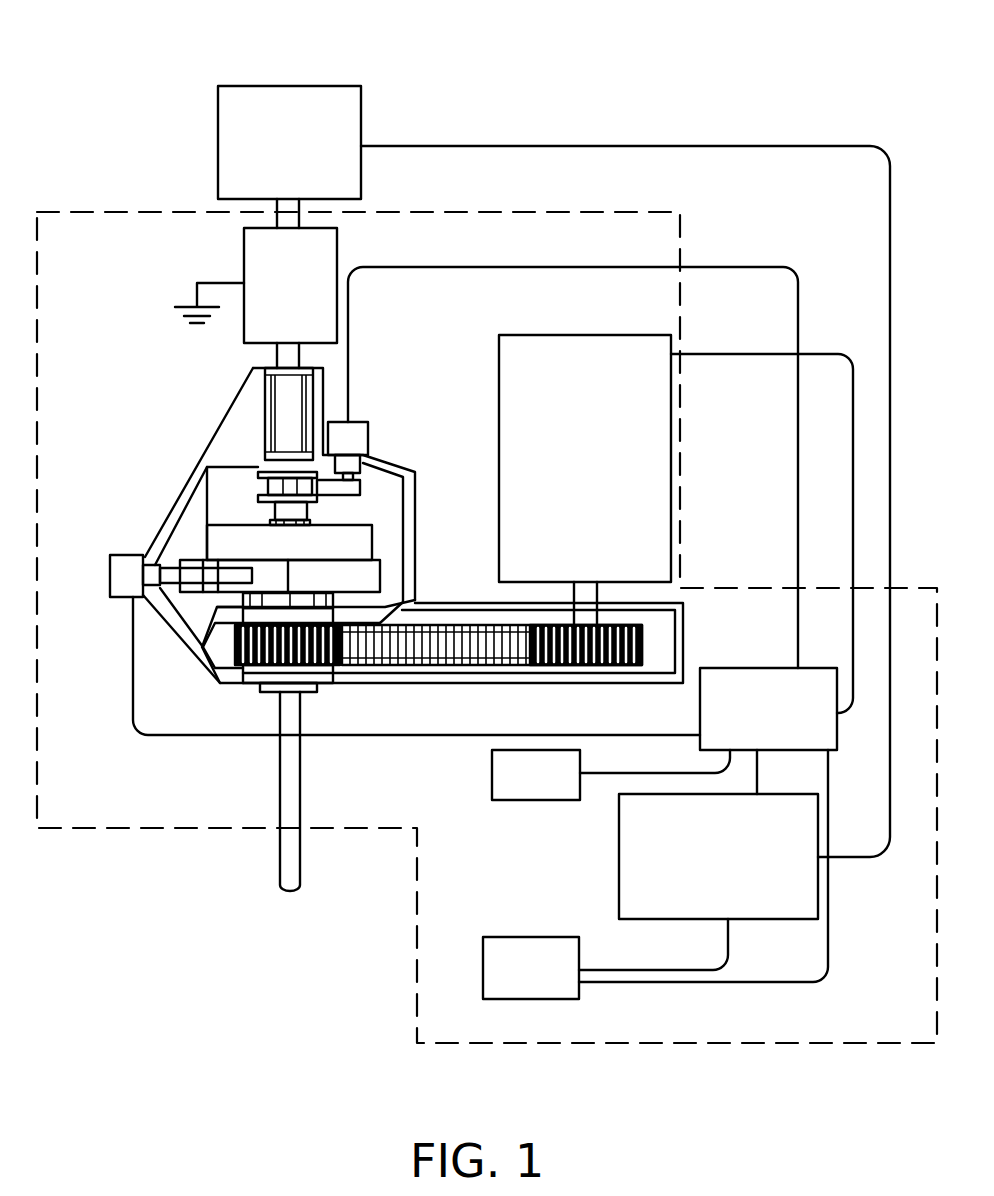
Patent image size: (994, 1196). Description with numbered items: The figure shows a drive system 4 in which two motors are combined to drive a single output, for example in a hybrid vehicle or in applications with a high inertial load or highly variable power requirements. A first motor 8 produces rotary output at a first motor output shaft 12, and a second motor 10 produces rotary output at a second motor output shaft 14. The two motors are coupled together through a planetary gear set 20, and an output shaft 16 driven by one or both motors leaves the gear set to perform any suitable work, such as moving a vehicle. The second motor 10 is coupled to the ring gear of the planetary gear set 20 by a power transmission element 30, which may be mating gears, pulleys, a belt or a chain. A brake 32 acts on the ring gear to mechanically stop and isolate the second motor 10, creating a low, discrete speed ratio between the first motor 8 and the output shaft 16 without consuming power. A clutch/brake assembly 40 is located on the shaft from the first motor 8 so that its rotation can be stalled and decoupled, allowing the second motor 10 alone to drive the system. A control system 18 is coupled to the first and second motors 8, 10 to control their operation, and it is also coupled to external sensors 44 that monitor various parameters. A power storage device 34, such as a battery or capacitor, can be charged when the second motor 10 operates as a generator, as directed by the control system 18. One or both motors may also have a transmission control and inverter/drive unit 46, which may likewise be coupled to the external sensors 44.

The drive system 4 is at (777, 68).
The first motor 8 is at (227, 135).
The second motor 10 is at (652, 467).
The first motor output shaft 12 is at (282, 222).
The second motor output shaft 14 is at (577, 594).
The output shaft 16 is at (290, 770).
The control system 18 is at (638, 850).
The planetary gear set 20 is at (218, 540).
The power transmission element 30 is at (428, 650).
The brake 32 is at (172, 567).
The power storage device 34 is at (515, 771).
The clutch/brake assembly 40 is at (267, 322).
The external sensors 44 is at (517, 950).
The transmission control and inverter/drive unit 46 is at (718, 707).